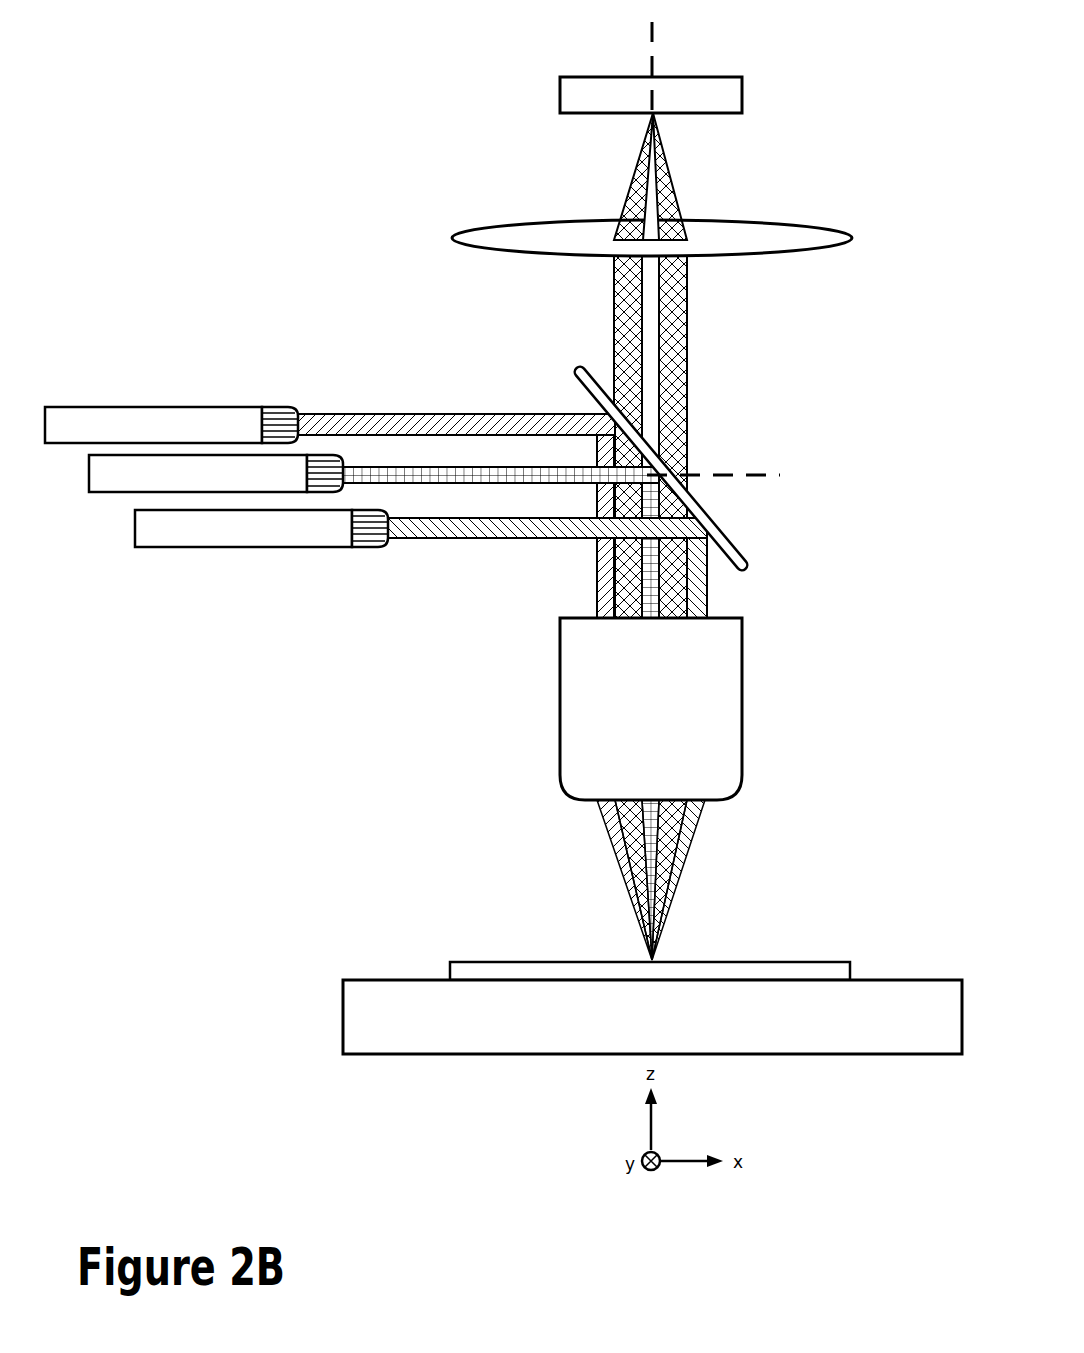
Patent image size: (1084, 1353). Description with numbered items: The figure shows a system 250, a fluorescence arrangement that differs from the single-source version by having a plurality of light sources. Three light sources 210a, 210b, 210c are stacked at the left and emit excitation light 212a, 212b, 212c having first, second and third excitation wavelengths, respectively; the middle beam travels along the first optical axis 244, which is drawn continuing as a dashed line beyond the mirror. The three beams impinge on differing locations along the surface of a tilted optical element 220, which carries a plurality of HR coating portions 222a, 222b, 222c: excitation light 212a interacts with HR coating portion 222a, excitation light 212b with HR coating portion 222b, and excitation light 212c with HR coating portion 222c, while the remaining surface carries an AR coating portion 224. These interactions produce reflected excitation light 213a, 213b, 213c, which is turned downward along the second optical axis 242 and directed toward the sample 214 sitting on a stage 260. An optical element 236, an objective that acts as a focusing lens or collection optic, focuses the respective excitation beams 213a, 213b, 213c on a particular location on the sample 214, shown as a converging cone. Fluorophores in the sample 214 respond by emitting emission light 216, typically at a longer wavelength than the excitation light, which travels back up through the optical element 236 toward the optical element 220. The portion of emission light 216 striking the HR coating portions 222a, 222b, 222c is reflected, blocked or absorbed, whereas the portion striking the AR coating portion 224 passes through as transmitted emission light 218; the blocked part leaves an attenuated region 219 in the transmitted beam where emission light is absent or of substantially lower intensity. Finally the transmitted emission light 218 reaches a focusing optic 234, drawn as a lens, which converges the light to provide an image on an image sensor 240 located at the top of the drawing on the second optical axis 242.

The light source 210a is at (153, 407).
The light source 210b is at (137, 492).
The light source 210c is at (182, 547).
The excitation light 212a is at (428, 414).
The excitation light 212b is at (463, 467).
The excitation light 212c is at (512, 518).
The reflected excitation light 213a is at (642, 608).
The reflected excitation light 213b is at (643, 610).
The reflected excitation light 213c is at (707, 600).
The sample 214 is at (532, 960).
The emission light 216 is at (628, 582).
The transmitted emission light 218 is at (632, 178).
The attenuated region 219 is at (673, 198).
The optical element 220 is at (742, 547).
The HR coating portion 222a is at (588, 413).
The HR coating portion 222b is at (618, 488).
The HR coating portion 222c is at (707, 545).
The AR coating portion 224 is at (597, 459).
The focusing optic 234 is at (467, 232).
The optical element 236 is at (560, 695).
The image sensor 240 is at (560, 93).
The second optical axis 242 is at (653, 57).
The first optical axis 244 is at (772, 474).
The system 250 is at (854, 127).
The stage 260 is at (343, 1010).